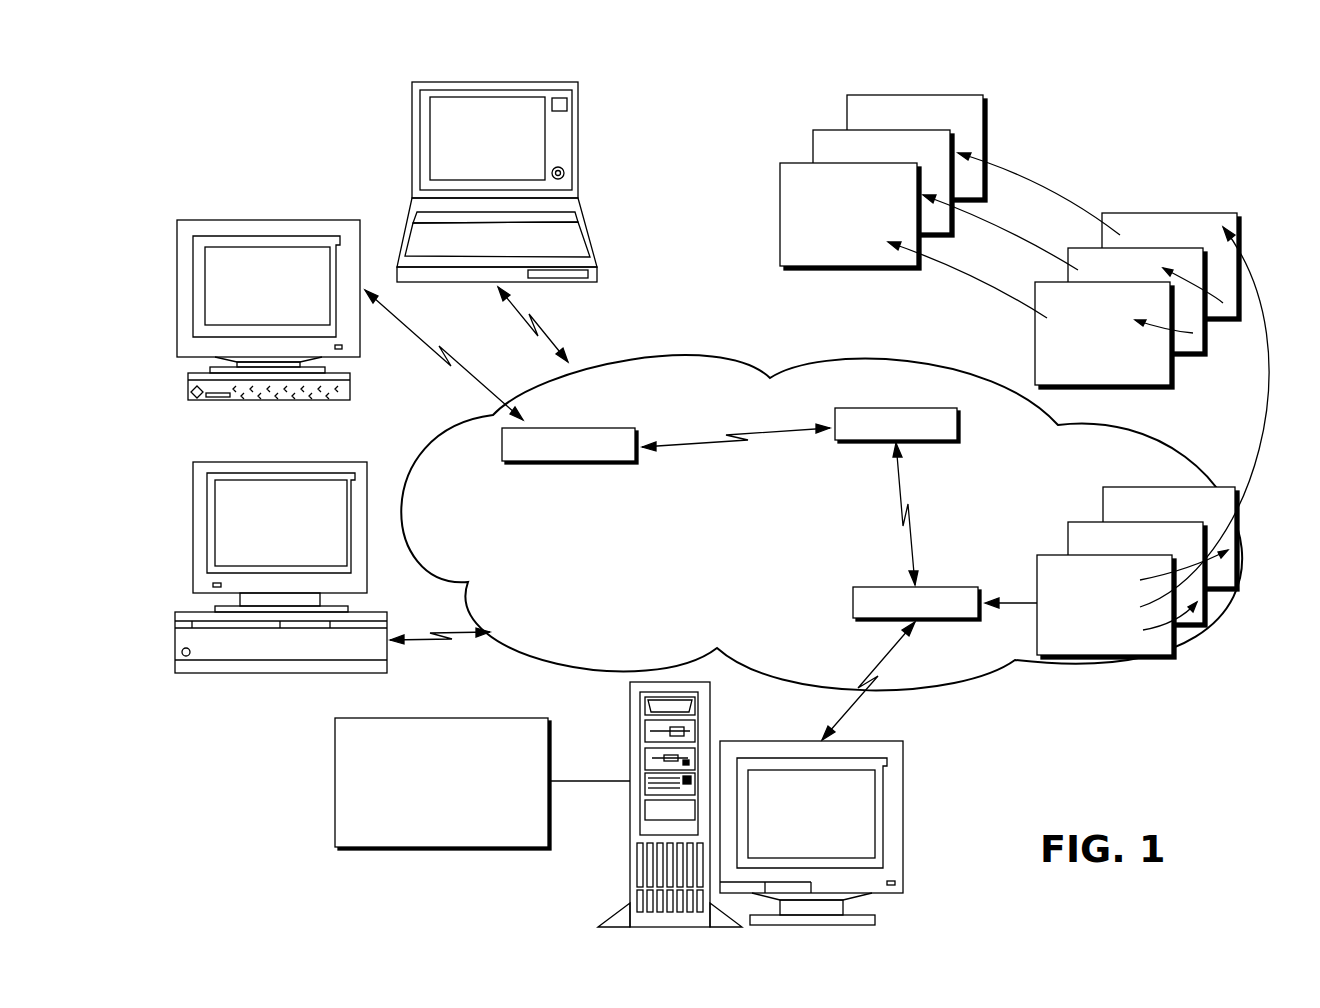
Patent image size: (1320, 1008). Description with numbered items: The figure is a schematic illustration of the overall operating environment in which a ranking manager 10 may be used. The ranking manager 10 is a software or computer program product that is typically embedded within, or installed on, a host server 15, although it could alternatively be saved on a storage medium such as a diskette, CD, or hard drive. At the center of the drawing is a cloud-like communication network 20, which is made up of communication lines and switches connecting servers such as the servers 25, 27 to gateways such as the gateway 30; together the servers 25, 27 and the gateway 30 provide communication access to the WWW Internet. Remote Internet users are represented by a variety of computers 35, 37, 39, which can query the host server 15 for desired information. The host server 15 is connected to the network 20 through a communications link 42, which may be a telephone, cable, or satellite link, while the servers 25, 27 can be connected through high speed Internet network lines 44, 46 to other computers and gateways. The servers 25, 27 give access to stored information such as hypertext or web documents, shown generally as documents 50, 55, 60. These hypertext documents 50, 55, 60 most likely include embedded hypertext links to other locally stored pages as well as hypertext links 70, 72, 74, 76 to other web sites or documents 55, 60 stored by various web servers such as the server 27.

The ranking manager 10 is at (335, 758).
The host server 15 is at (628, 725).
The communication network 20 is at (688, 353).
The server 25 is at (900, 588).
The server 27 is at (910, 408).
The gateway 30 is at (572, 467).
The computer 35 is at (588, 233).
The computer 37 is at (332, 218).
The computer 39 is at (330, 462).
The communications link 42 is at (842, 727).
The high speed Internet network line 44 is at (908, 543).
The high speed Internet network line 46 is at (725, 443).
The hypertext documents 50 is at (1245, 558).
The hypertext documents 55 is at (1250, 237).
The hypertext documents 60 is at (798, 148).
The hypertext link 70 is at (1270, 408).
The hypertext link 72 is at (1057, 198).
The hypertext link 74 is at (1020, 235).
The hypertext link 76 is at (975, 280).